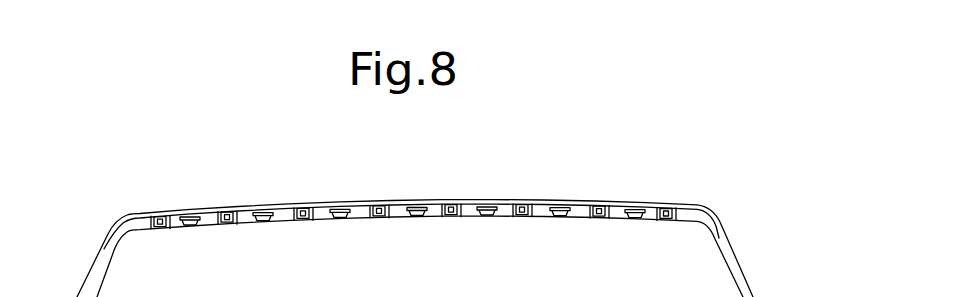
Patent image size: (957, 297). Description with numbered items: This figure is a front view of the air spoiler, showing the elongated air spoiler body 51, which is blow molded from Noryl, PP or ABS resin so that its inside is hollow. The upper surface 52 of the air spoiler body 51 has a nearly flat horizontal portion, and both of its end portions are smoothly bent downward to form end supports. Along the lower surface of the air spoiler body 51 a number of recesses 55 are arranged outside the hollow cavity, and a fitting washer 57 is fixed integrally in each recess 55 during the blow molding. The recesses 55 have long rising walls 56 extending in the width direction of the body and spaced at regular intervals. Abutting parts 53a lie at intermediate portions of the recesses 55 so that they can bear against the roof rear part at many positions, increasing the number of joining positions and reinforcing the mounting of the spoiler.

The air spoiler body 51 is at (697, 190).
The upper surface 52 is at (128, 215).
The abutting parts 53a is at (190, 217).
The recesses 55 is at (155, 216).
The rising walls 56 is at (137, 230).
The fitting washer 57 is at (210, 225).